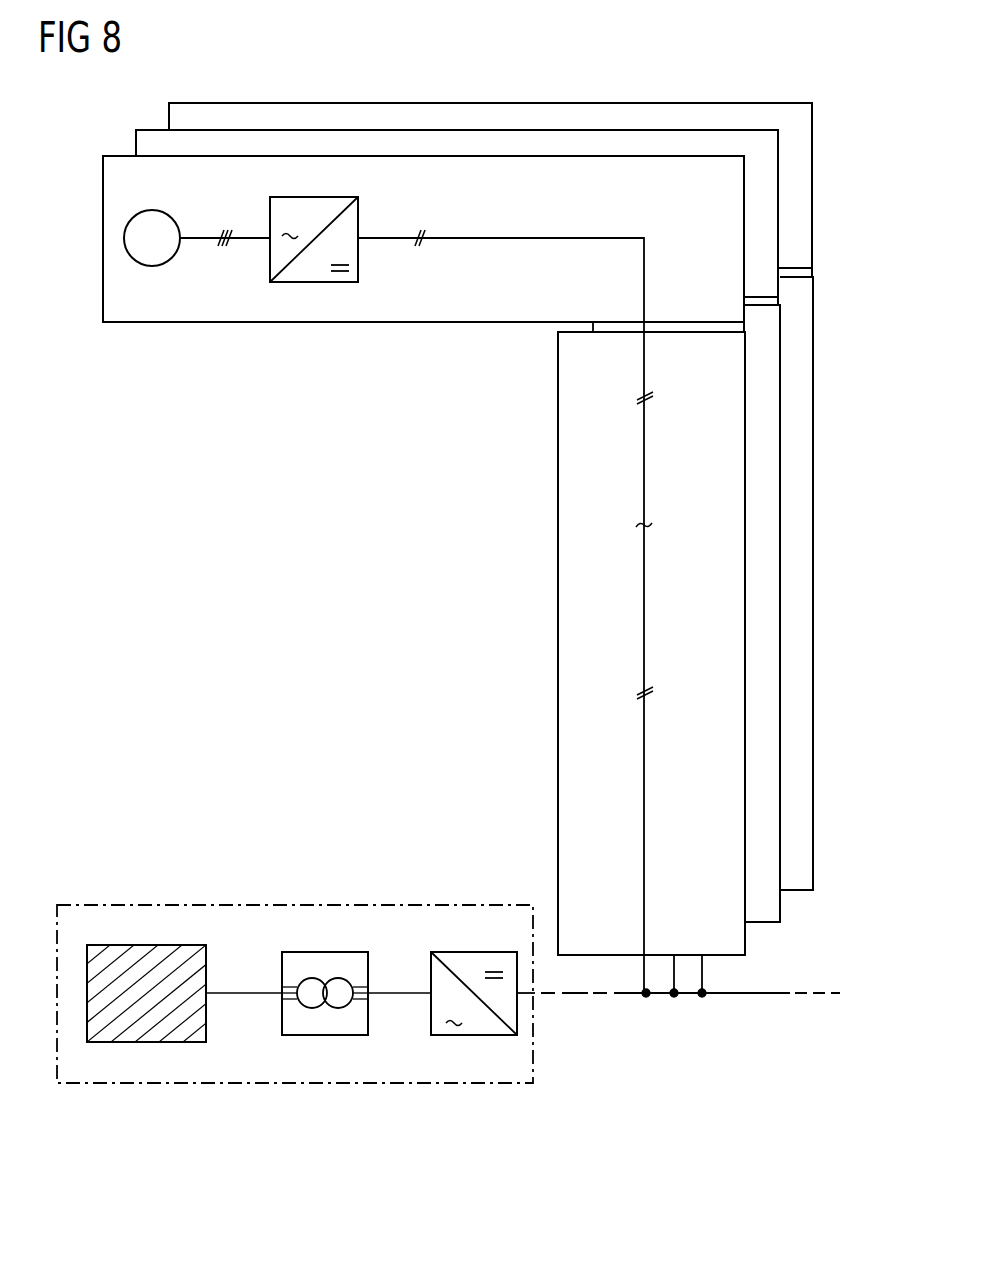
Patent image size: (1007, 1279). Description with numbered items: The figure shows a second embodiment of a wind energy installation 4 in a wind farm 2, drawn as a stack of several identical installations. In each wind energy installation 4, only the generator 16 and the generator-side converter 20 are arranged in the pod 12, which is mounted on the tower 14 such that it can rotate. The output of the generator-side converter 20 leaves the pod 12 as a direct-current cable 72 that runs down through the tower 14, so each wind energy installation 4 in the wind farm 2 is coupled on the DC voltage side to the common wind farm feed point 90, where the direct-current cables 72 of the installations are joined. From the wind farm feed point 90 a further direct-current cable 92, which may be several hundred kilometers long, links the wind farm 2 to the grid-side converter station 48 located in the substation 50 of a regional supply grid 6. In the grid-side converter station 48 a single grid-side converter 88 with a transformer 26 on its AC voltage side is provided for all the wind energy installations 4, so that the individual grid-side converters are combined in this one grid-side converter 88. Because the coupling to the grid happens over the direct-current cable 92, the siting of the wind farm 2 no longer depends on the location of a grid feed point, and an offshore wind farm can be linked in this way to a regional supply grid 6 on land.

The wind farm 2 is at (292, 612).
The wind energy installation 4 is at (277, 157).
The regional supply grid 6 is at (157, 945).
The pod 12 is at (237, 322).
The tower 14 is at (558, 535).
The generator 16 is at (148, 266).
The generator-side converter 20 is at (322, 282).
The transformer 26 is at (322, 952).
The grid-side converter station 48 is at (233, 1050).
The substation 50 is at (245, 905).
The direct-current cable 72 is at (644, 470).
The grid-side converter 88 is at (470, 952).
The wind farm feed point 90 is at (687, 996).
The further direct-current cable 92 is at (575, 996).